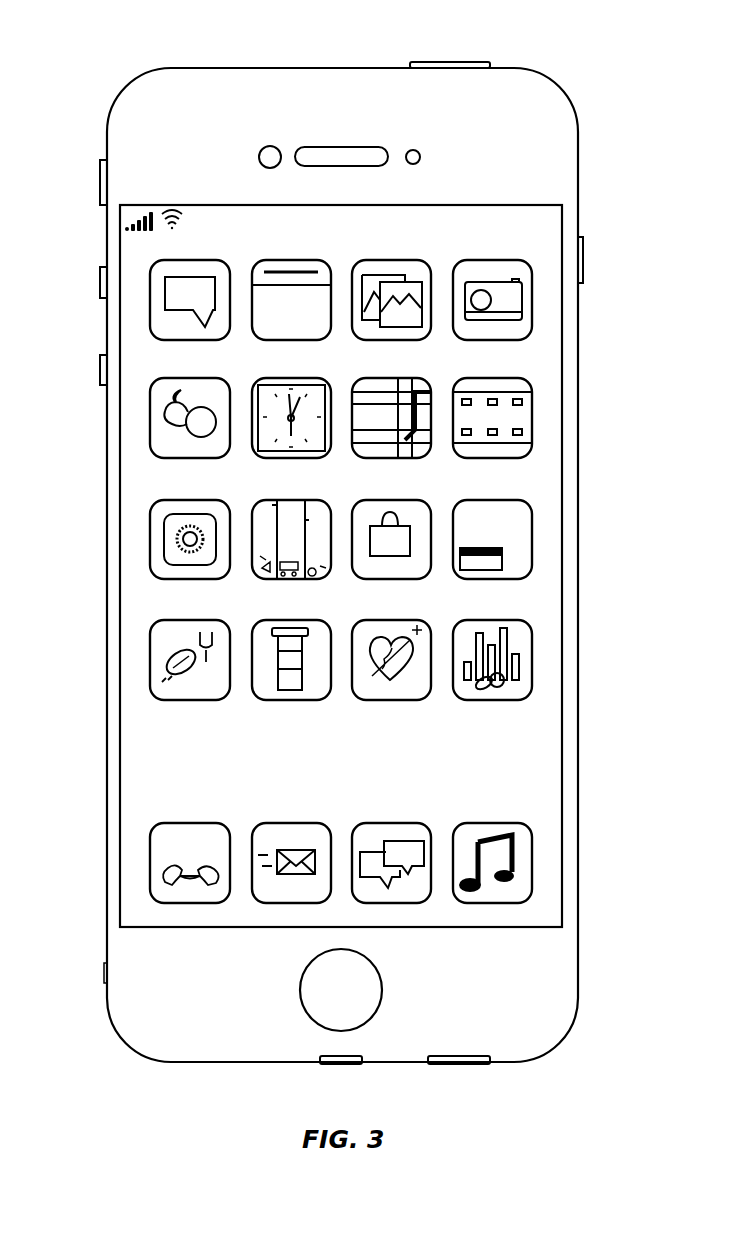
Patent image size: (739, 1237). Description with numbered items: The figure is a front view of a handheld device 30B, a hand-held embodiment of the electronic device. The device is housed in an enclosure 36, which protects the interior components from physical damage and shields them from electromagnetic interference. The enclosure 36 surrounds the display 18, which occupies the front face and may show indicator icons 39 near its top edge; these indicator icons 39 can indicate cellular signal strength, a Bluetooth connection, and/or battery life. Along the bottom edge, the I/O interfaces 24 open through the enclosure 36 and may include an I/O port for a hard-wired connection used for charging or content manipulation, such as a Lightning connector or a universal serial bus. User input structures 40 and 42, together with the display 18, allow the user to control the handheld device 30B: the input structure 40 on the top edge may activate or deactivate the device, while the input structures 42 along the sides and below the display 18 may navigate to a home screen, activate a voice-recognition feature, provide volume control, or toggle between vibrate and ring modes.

The handheld device 30B is at (112, 63).
The enclosure 36 is at (580, 157).
The input structure 40 is at (450, 61).
The input structures 42 is at (99, 183).
The I/O interfaces 24 is at (341, 1066).
The display 18 is at (566, 612).
The indicator icons 39 is at (173, 206).